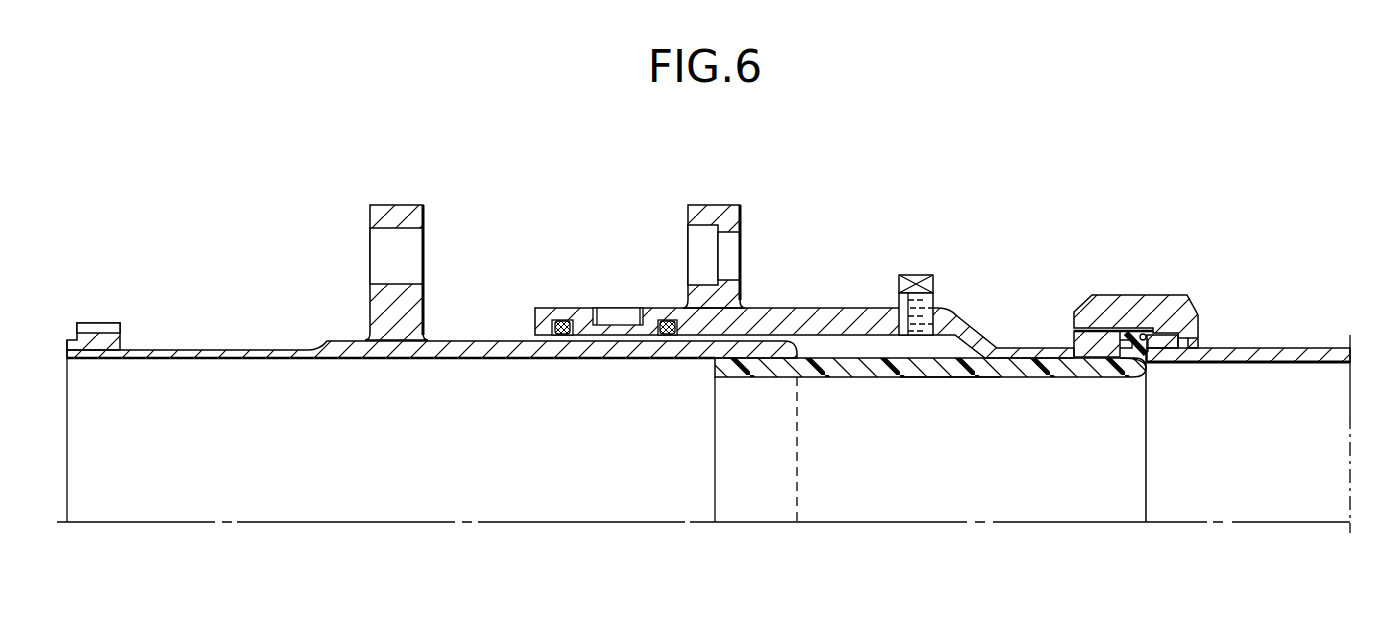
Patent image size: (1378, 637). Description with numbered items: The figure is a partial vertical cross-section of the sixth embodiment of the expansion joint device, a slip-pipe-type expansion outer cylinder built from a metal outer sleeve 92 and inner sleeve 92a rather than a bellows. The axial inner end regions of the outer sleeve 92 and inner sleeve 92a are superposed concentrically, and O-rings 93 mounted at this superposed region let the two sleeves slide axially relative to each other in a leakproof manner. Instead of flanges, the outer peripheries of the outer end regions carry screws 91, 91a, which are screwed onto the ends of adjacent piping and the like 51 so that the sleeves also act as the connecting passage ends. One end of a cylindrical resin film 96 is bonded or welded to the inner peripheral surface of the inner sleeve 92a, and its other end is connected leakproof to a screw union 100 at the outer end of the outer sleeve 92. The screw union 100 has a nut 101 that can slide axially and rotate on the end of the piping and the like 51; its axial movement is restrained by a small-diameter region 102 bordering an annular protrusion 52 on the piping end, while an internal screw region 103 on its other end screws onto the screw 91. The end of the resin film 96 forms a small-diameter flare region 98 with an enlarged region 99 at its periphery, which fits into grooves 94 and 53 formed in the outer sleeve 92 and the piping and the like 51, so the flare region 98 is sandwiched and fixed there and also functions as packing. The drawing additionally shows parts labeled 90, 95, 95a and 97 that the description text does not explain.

The piping and the like 51 is at (1320, 350).
The annular protrusion 52 is at (1160, 346).
The groove 53 is at (1150, 365).
The bolt 90 is at (913, 276).
The screw 91 is at (1073, 330).
The screw 91a is at (103, 325).
The outer sleeve 92 is at (818, 312).
The inner sleeve 92a is at (327, 338).
The O-rings 93 is at (647, 320).
The groove 94 is at (1122, 368).
The spacer block 95 is at (713, 212).
The spacer block 95a is at (394, 216).
The cylindrical resin film 96 is at (867, 379).
The packing lower surface 97 is at (962, 372).
The flare region 98 is at (1115, 370).
The enlarged region 99 is at (1140, 334).
The screw union 100 is at (1190, 286).
The nut 101 is at (1093, 300).
The small-diameter region 102 is at (1190, 340).
The internal screw region 103 is at (1149, 345).